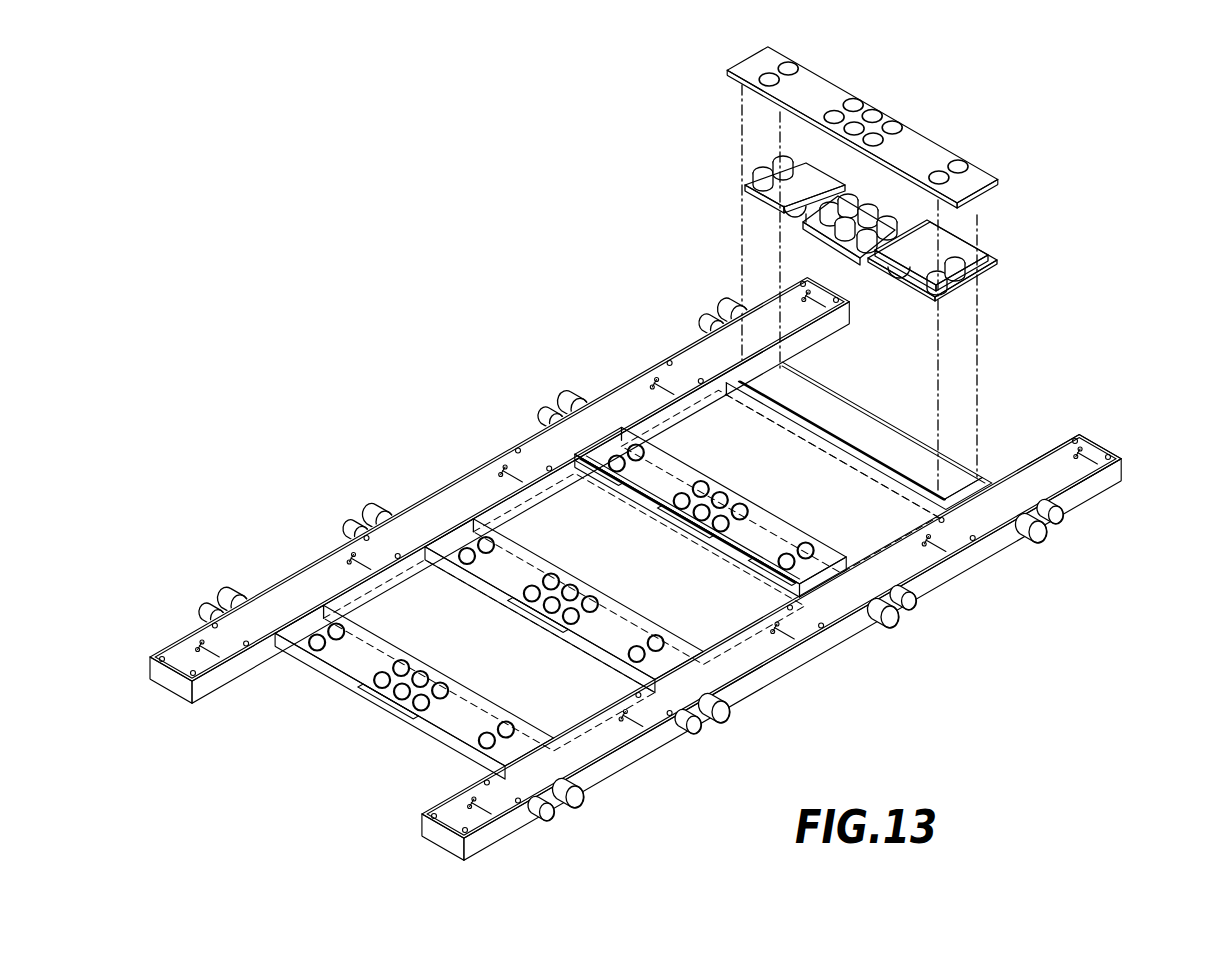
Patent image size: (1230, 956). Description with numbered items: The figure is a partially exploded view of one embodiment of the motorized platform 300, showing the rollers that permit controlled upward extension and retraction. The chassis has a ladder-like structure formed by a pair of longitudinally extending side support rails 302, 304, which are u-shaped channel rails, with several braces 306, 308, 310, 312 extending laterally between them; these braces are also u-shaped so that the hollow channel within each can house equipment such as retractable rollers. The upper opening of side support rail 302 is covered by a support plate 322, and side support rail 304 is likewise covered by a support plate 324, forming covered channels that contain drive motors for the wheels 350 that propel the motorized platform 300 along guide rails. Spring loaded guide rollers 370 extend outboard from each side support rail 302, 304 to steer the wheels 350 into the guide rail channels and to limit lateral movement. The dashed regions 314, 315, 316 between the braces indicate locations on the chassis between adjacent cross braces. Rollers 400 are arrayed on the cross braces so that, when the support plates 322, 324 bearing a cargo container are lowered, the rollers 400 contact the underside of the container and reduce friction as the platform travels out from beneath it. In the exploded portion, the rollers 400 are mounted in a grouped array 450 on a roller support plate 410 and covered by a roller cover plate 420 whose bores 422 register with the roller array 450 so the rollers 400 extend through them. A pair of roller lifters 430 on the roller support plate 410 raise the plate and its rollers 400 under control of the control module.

The motorized platform 300 is at (671, 454).
The side support rail 302 is at (845, 330).
The side support rail 304 is at (1123, 465).
The brace 306 is at (985, 475).
The brace 308 is at (780, 528).
The brace 310 is at (625, 612).
The brace 312 is at (440, 745).
The first base section 314 is at (448, 628).
The second base section 315 is at (600, 548).
The third base section 316 is at (792, 460).
The support plate 322 is at (430, 503).
The support plate 324 is at (1088, 450).
The wheels 350 is at (705, 332).
The spring loaded guide rollers 370 is at (722, 322).
The rollers 400 is at (782, 160).
The roller support plate 410 is at (968, 290).
The roller cover plate 420 is at (862, 127).
The bores 422 is at (878, 114).
The roller lifters 430 is at (788, 212).
The grouped arrays 450 is at (900, 235).